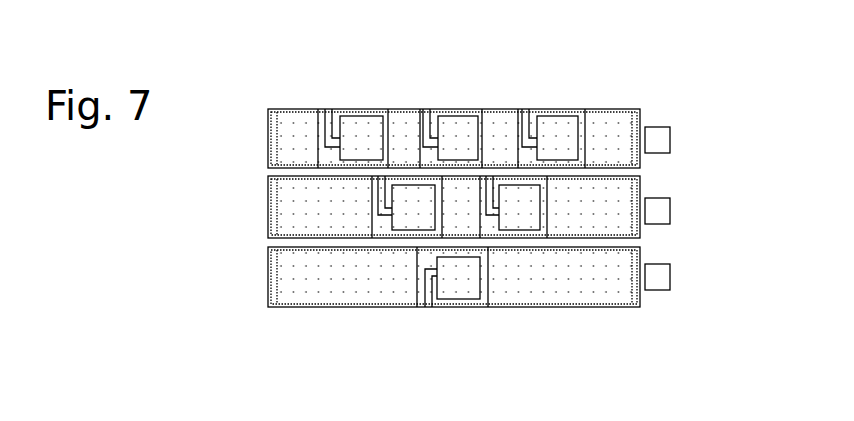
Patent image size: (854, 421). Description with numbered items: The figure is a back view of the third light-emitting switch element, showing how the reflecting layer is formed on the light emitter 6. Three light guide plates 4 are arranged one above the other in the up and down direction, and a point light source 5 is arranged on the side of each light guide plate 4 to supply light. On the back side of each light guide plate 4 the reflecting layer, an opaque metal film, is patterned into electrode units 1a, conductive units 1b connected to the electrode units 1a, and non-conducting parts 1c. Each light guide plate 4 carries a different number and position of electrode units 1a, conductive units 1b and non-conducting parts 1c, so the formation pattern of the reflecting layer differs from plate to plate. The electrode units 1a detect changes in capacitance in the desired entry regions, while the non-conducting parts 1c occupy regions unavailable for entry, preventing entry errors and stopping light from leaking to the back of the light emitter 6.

The electrode unit 1a is at (468, 130).
The conductive unit 1b is at (323, 109).
The non-conducting part 1c is at (405, 122).
The light guide plate 4 is at (268, 160).
The point light source 5 is at (665, 137).
The light emitter 6 is at (685, 89).